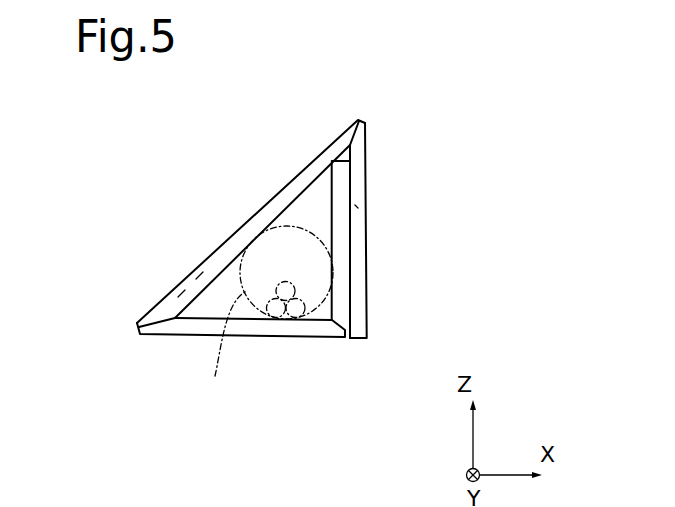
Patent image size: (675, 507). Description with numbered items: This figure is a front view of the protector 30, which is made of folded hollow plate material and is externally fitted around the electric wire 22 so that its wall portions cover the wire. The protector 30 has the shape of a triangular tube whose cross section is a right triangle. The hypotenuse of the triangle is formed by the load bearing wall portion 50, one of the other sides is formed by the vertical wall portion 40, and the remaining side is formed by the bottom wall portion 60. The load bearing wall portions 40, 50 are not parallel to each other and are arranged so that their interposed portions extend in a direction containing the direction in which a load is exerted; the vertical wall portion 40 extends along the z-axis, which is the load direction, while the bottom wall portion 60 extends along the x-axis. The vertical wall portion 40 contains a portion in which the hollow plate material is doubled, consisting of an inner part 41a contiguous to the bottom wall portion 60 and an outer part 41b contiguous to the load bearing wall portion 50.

The protector 30 is at (161, 158).
The load bearing wall portion 50 is at (252, 217).
The bottom wall portion 60 is at (313, 327).
The vertical wall portion 40 is at (442, 225).
The inner part 41a is at (343, 242).
The outer part 41b is at (361, 270).
The electric wire 22 is at (266, 316).